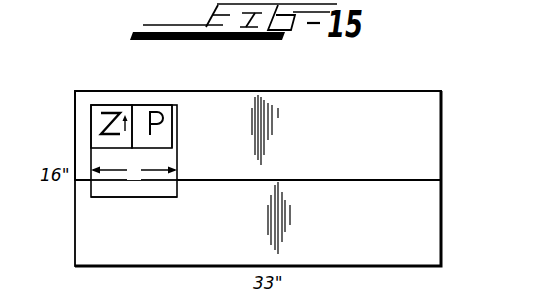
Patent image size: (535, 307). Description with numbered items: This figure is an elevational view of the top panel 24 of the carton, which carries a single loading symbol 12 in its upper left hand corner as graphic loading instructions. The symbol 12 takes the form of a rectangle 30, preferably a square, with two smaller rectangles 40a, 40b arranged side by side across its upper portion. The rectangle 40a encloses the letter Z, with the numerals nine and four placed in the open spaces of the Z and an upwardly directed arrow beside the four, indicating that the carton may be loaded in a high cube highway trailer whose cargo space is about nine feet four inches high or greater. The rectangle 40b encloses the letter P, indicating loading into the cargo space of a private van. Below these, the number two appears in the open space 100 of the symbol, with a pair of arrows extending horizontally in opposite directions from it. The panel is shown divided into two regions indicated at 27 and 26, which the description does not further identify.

The rectangle 40a is at (110, 105).
The rectangle 40b is at (155, 105).
The open space 100 is at (177, 158).
The rectangle 30 is at (156, 199).
The symbol S12 12 is at (130, 201).
The top panel 24 is at (353, 234).
The lower section 26 is at (436, 228).
The upper section 27 is at (436, 124).